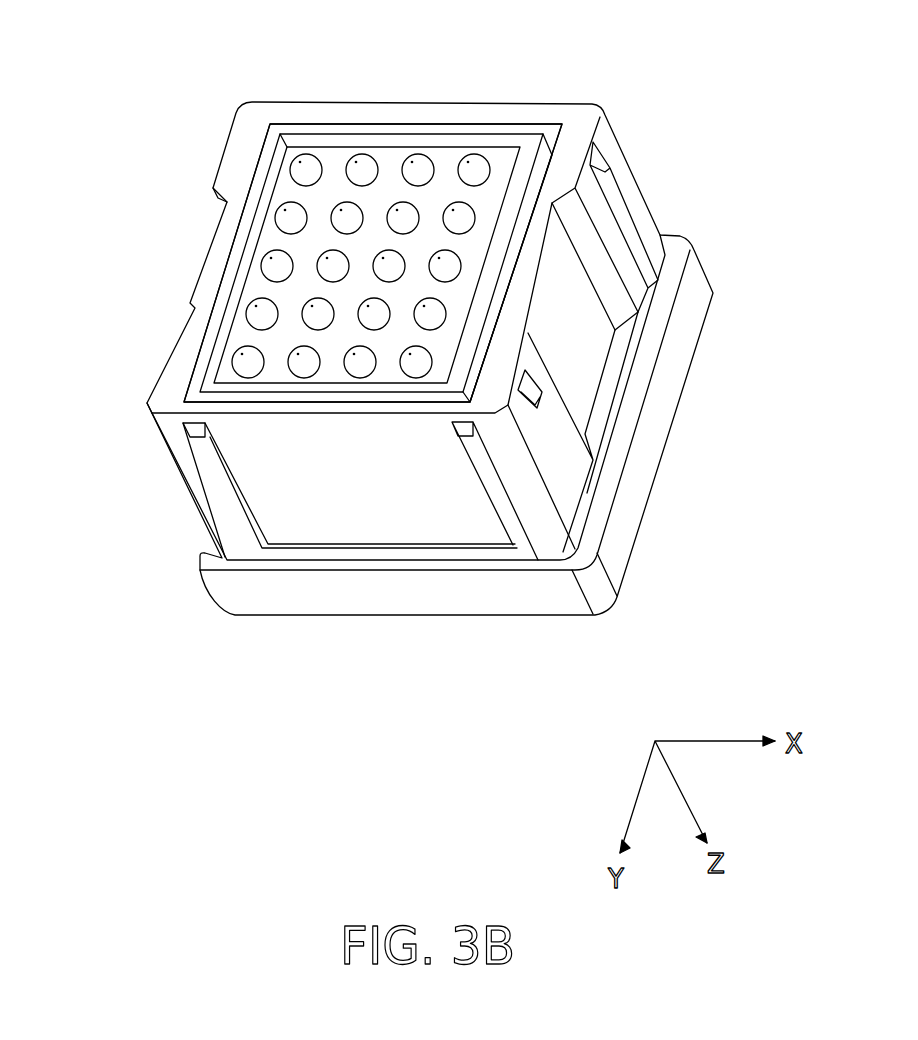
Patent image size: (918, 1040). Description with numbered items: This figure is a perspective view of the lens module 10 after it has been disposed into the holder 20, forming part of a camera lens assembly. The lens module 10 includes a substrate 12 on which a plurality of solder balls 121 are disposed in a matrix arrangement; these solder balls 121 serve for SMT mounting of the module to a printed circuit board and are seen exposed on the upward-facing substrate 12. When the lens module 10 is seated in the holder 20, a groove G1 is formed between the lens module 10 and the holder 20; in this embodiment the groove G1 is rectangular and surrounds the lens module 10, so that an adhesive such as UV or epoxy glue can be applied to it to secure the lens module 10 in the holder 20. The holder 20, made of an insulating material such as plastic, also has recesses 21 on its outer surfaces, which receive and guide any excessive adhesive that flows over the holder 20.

The lens module 10 is at (493, 143).
The substrate 12 is at (222, 345).
The solder balls 121 is at (254, 313).
The holder 20 is at (195, 500).
The recesses 21 is at (193, 305).
The groove G1 is at (367, 130).